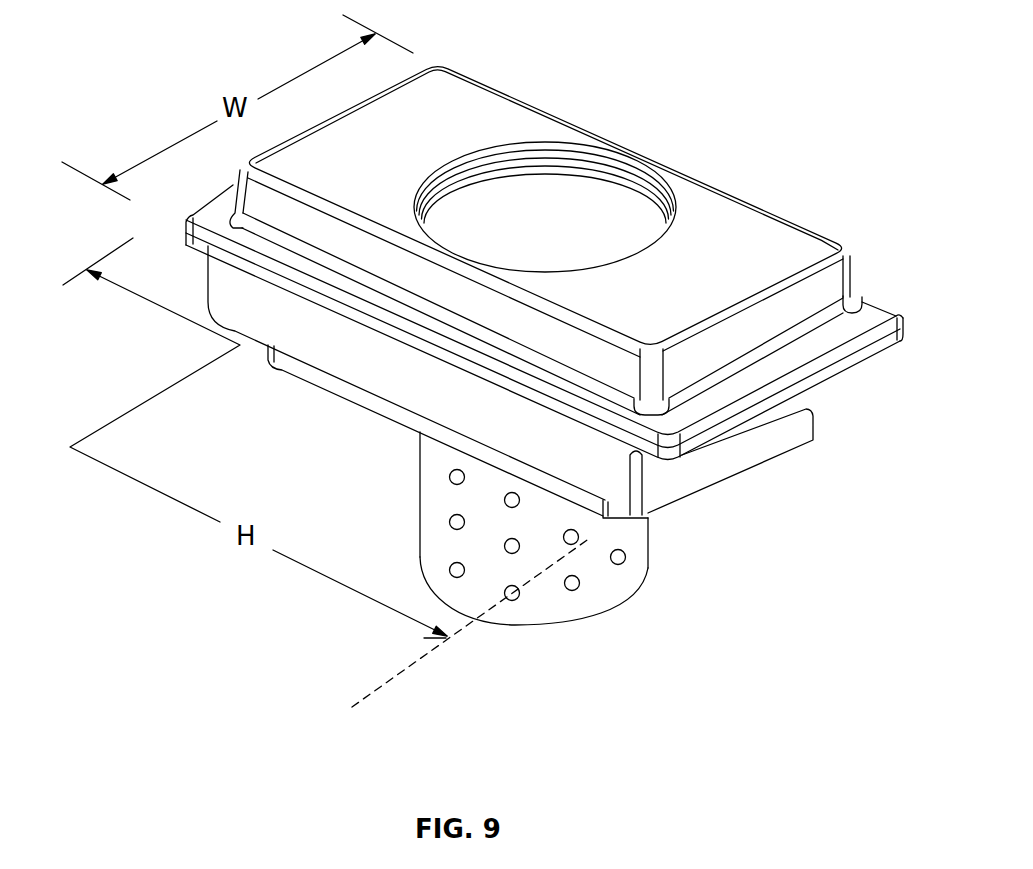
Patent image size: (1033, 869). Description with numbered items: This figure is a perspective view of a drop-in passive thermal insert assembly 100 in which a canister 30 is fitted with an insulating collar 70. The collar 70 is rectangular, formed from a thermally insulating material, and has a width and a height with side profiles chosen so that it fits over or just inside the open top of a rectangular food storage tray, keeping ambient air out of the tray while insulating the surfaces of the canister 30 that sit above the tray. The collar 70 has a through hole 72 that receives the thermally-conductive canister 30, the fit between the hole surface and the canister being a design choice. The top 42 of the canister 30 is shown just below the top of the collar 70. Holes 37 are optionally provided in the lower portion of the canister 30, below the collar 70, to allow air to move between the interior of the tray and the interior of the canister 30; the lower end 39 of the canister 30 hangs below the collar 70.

The drain assembly 100 is at (836, 46).
The collar 70 is at (561, 241).
The through hole 72 is at (677, 205).
The top of the canister 42 is at (580, 177).
The canister 30 is at (551, 572).
The holes 37 is at (577, 588).
The rounded bottom 39 is at (492, 622).